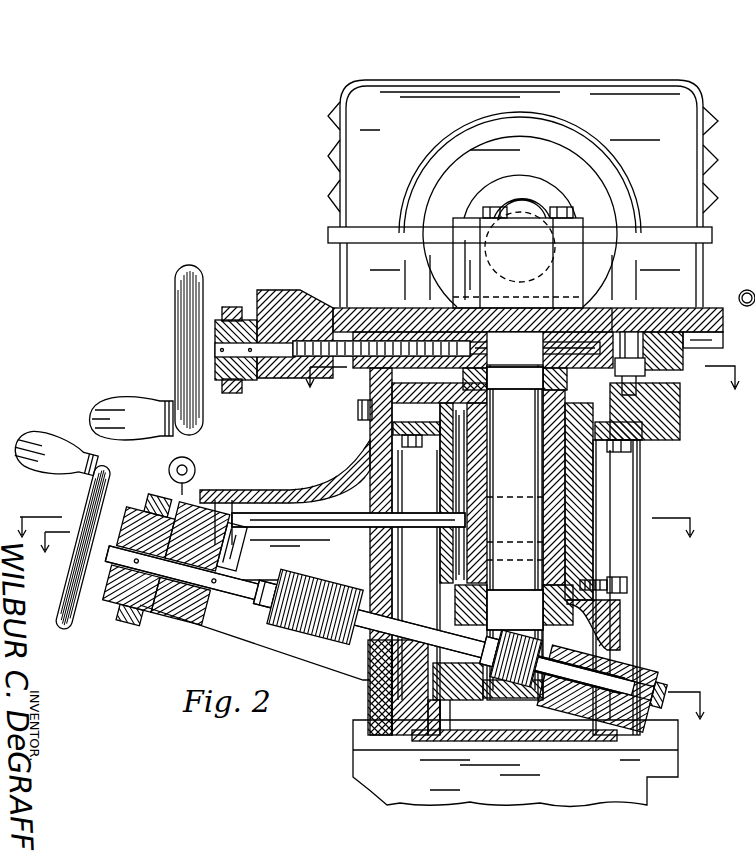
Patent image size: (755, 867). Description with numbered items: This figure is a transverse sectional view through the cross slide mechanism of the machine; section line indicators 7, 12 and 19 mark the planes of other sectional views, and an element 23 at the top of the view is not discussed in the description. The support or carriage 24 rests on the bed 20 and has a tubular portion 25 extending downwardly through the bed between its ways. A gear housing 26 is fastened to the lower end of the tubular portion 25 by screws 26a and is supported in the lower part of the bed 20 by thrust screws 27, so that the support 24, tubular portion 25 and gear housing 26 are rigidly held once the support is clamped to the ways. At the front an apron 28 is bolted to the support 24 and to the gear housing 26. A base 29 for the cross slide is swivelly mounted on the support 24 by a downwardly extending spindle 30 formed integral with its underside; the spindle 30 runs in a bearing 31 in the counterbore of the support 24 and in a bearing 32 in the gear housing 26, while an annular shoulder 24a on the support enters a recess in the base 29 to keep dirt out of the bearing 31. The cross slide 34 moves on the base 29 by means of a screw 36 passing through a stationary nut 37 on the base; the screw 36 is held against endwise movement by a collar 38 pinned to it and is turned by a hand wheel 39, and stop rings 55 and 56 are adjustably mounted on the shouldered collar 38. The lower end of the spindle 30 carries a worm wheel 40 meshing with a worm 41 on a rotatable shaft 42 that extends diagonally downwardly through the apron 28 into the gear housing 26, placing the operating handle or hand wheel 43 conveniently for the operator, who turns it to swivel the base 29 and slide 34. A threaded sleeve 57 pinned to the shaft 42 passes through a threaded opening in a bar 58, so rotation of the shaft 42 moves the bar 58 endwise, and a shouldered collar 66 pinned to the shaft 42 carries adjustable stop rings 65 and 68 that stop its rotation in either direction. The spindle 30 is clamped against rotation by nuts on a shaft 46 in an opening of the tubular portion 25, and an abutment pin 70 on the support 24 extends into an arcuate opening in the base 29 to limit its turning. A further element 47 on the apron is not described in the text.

The section line 7- 7 is at (377, 632).
The section line 12- 12 is at (523, 384).
The section line 19- 19 is at (366, 516).
The bed 20 is at (592, 492).
The motor 23 is at (698, 125).
The support or carriage 24 is at (655, 410).
The annular shoulder 24a is at (612, 330).
The tubular portion 25 is at (560, 470).
The gear housing 26 is at (622, 622).
The screws 26a is at (500, 560).
The thrust screws 27 is at (625, 583).
The apron 28 is at (300, 482).
The base 29 is at (690, 344).
The spindle 30 is at (515, 532).
The bearing 31 is at (497, 380).
The bearing 32 is at (545, 608).
The cross slide 34 is at (708, 312).
The screw 36 is at (368, 356).
The stationary nut 37 is at (418, 340).
The collar 38 is at (254, 305).
The hand wheel 39 is at (202, 282).
The worm wheel 40 is at (448, 672).
The worm 41 is at (502, 686).
The rotatable shaft 42 is at (368, 669).
The operating handle 43 is at (71, 545).
The shaft 46 is at (273, 527).
The knob 47 is at (196, 478).
The stop ring 55 is at (232, 388).
The second stop ring 56 is at (242, 390).
The threaded sleeve 57 is at (248, 618).
The bar 58 is at (321, 584).
The stop ring 65 is at (188, 514).
The shouldered collar 66 is at (149, 624).
The stop ring 68 is at (150, 489).
The abutment pin 70 is at (640, 375).